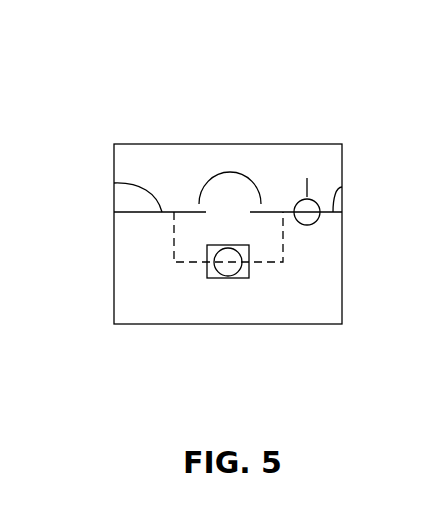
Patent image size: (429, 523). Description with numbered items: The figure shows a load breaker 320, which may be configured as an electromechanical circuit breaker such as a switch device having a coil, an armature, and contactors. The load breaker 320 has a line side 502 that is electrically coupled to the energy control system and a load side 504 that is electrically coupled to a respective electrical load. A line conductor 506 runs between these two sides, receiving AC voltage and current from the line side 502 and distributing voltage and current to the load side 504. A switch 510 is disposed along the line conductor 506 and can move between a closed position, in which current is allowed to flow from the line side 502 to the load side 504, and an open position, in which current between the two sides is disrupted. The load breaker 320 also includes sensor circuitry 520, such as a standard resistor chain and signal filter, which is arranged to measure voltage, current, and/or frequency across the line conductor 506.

The load breaker 320 is at (306, 132).
The line side 502 is at (128, 213).
The load side 504 is at (342, 187).
The line conductor 506 is at (114, 183).
The switch 510 is at (232, 178).
The sensor circuitry 520 is at (249, 278).